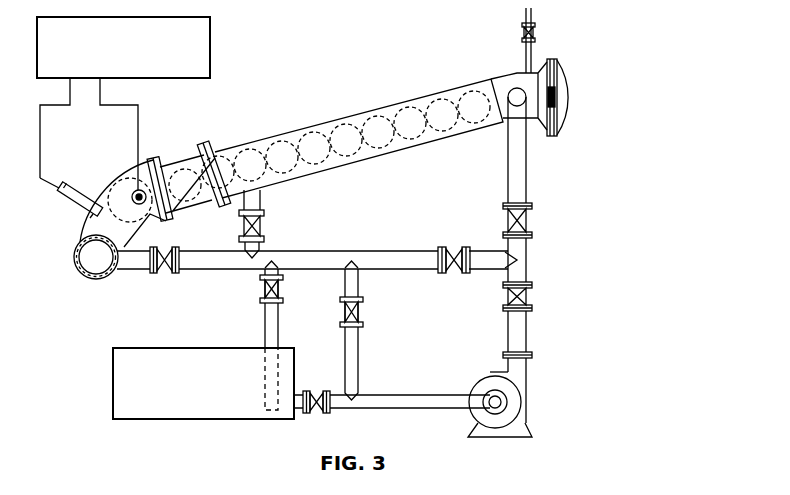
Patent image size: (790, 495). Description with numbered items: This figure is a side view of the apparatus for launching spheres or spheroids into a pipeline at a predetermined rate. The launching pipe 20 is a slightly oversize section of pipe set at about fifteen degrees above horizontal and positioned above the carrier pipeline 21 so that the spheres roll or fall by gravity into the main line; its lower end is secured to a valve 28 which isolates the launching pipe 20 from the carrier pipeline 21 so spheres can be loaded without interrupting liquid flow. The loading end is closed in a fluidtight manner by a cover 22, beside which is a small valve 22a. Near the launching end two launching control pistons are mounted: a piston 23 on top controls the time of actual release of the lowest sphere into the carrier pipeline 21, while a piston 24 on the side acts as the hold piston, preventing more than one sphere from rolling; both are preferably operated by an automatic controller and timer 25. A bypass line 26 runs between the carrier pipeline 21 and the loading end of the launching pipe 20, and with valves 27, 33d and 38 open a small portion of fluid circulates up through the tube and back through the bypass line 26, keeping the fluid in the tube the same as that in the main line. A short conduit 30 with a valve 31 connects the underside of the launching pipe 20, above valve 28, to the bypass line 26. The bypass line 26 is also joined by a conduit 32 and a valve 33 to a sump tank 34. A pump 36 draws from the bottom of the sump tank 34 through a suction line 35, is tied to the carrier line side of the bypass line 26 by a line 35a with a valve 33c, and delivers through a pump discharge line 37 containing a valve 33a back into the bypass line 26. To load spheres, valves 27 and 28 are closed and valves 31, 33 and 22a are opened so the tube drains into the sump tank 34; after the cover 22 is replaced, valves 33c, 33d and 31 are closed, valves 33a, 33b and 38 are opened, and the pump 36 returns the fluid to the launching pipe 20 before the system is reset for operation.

The launching pipe 20 is at (247, 148).
The carrier pipeline 21 is at (80, 270).
The cover 22 is at (558, 68).
The valve 22a is at (537, 25).
The piston 23 is at (66, 205).
The piston 24 is at (133, 192).
The controller and timer 25 is at (203, 52).
The bypass line 26 is at (230, 251).
The valve 27 is at (161, 272).
The valve 28 is at (213, 147).
The conduit 30 is at (262, 249).
The valve 31 is at (264, 213).
The conduit 32 is at (280, 272).
The valve 33 is at (262, 297).
The valve 33a is at (530, 300).
The valve 33b is at (313, 412).
The valve 33c is at (362, 322).
The valve 33d is at (440, 250).
The sump tank 34 is at (170, 347).
The suction line 35 is at (398, 409).
The line 35a is at (361, 370).
The pump 36 is at (490, 377).
The pump discharge line 37 is at (528, 338).
The valve 38 is at (530, 230).